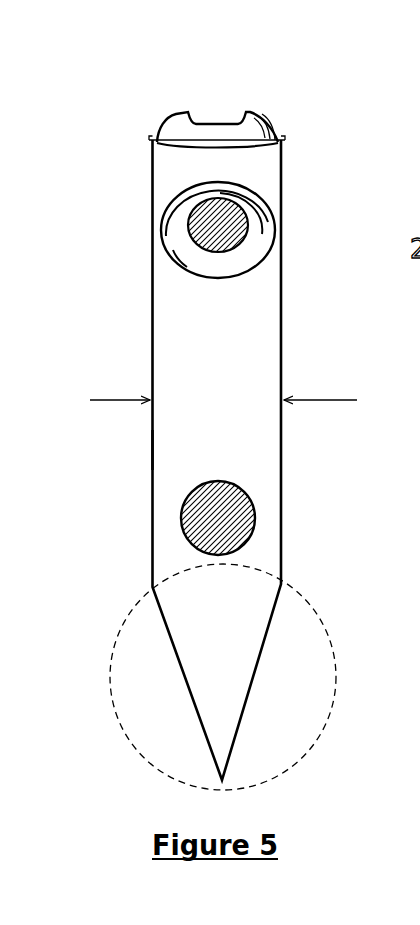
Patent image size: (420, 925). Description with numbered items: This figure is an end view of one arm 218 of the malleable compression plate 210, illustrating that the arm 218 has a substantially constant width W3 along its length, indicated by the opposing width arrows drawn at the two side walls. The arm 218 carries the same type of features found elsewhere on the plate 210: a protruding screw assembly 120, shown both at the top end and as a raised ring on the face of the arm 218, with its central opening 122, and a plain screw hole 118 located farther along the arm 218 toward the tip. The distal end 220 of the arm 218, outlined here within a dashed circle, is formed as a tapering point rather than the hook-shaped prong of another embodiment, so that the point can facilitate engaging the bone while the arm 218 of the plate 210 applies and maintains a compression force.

The screw hole 118 is at (237, 515).
The screw assembly 120 is at (157, 132).
The opening 122 is at (220, 107).
The malleable compression plate 210 is at (100, 305).
The arm 218 is at (152, 442).
The distal end 220 is at (133, 611).
The width W3 is at (100, 400).